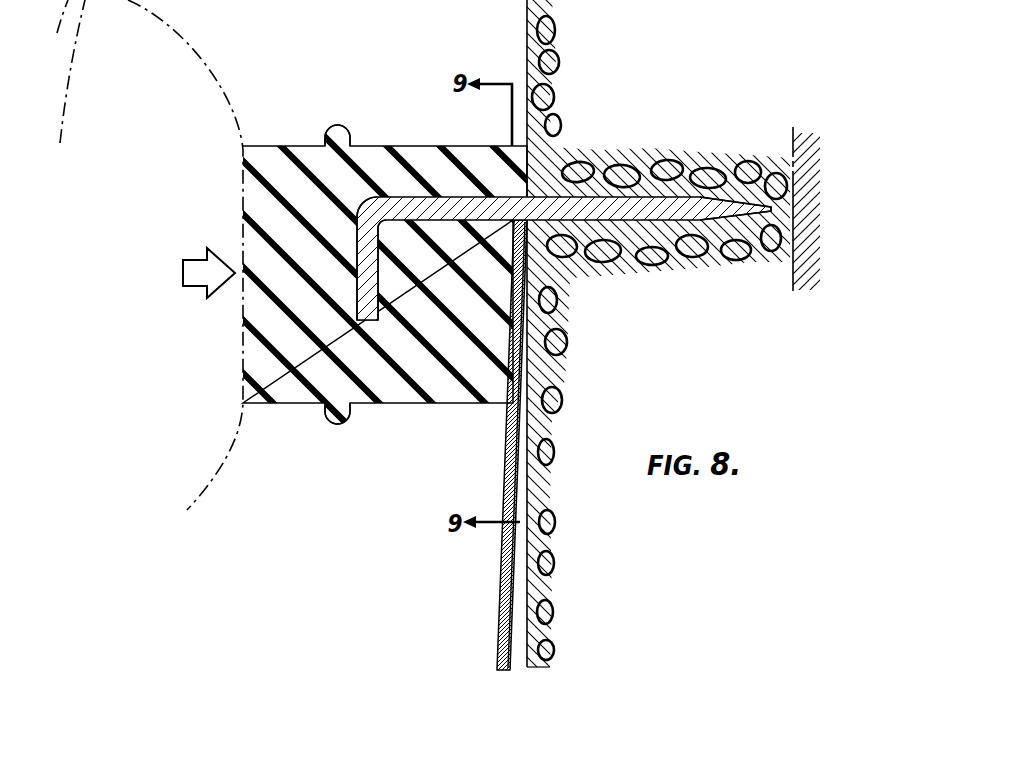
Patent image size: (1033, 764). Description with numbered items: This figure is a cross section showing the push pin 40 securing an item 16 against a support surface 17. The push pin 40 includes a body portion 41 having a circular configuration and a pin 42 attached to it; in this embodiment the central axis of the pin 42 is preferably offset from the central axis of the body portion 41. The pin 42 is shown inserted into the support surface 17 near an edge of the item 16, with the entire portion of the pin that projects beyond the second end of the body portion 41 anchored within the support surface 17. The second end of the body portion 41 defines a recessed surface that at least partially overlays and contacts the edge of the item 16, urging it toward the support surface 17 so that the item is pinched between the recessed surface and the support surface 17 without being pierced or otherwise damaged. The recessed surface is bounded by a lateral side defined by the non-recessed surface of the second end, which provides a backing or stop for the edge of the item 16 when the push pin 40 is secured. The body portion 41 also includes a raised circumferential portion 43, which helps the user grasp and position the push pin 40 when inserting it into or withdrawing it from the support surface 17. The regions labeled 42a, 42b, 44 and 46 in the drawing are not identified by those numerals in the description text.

The item 16 is at (500, 618).
The support surface 17 is at (560, 66).
The push pin 40 is at (303, 430).
The body portion 41 is at (400, 390).
The pin 42 is at (576, 199).
The tapered end of anchor bar 42a is at (762, 222).
The leg of anchor bar 42b is at (383, 196).
The raised circumferential portion 43 is at (337, 138).
The wall 44 is at (768, 200).
The channel 46 is at (360, 302).